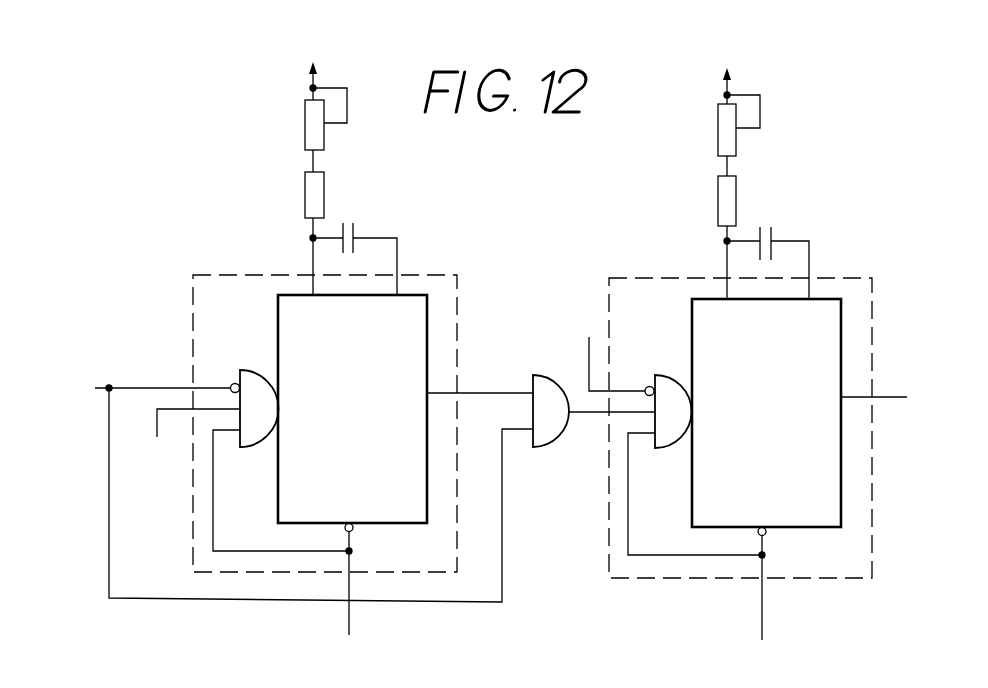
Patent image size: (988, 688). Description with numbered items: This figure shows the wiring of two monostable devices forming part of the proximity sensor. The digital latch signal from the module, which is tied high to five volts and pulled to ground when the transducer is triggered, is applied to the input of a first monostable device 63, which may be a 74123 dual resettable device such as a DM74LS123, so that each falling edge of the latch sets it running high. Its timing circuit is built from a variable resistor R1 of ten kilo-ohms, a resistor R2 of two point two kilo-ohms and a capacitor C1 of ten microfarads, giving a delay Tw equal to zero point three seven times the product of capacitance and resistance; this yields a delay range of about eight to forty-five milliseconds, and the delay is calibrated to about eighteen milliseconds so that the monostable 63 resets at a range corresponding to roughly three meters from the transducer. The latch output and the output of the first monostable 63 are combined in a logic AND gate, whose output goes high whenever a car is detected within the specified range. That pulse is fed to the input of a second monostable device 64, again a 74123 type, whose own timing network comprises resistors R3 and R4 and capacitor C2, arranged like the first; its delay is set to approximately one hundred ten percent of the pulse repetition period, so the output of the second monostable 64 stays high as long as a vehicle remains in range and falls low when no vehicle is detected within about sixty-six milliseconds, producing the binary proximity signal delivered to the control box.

The first monostable device 63 is at (418, 254).
The second monostable device 64 is at (824, 226).
The variable resistor R1 is at (307, 119).
The resistor R2 is at (295, 195).
The timing capacitor C1 is at (355, 247).
The variable resistor R3 is at (721, 125).
The resistor R4 is at (709, 201).
The timing capacitor C2 is at (768, 252).
The 74123 dual resettable monostable device 74123 is at (352, 409).